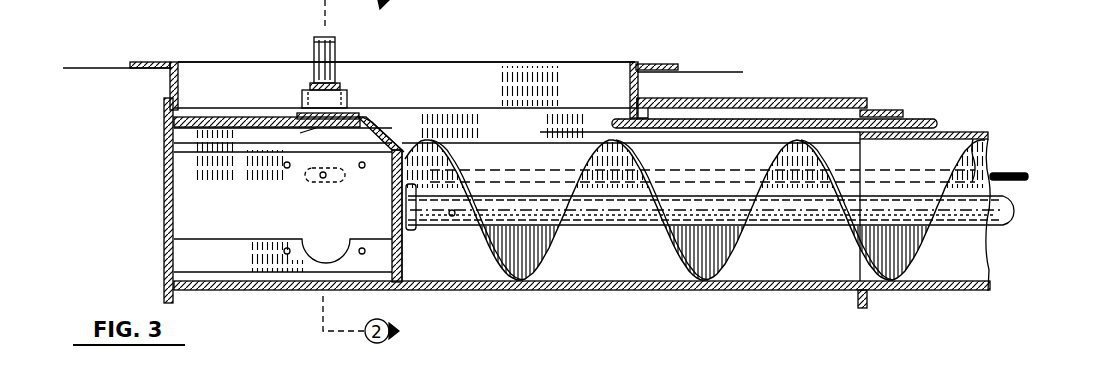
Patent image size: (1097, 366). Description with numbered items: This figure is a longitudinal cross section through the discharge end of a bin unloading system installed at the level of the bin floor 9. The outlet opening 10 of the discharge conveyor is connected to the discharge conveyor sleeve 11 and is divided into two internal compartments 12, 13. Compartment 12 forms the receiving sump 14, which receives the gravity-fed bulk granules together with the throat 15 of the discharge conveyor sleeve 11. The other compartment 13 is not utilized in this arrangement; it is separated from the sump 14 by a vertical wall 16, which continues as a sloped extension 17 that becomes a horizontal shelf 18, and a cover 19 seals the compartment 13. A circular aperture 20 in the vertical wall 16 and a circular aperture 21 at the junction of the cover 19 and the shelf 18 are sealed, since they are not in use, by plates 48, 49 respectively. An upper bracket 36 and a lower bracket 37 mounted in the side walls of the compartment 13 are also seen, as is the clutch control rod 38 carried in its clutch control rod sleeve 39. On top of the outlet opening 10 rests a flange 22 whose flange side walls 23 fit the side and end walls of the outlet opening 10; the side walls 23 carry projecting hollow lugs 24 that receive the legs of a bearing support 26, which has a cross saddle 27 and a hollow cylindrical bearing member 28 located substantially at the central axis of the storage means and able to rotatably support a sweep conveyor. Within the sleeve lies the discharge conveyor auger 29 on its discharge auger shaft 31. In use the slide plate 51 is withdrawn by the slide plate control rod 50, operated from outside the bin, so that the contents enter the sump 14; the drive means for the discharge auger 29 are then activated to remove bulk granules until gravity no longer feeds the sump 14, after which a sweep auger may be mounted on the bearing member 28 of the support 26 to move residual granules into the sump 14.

The bin floor 9 is at (76, 68).
The outlet opening 10 is at (506, 294).
The discharge conveyor sleeve 11 is at (977, 133).
The compartment 12 is at (646, 268).
The compartment 13 is at (195, 220).
The receiving sump 14 is at (546, 83).
The throat 15 is at (724, 135).
The vertical wall 16 is at (404, 258).
The sloped extension 17 is at (385, 132).
The horizontal shelf 18 is at (362, 121).
The cover 19 is at (212, 118).
The circular aperture 20 is at (392, 207).
The circular aperture 21 is at (313, 130).
The flange 22 is at (152, 62).
The flange side walls 23 is at (180, 80).
The hollow lugs 24 is at (345, 95).
The bearing support 26 is at (340, 58).
The cross saddle 27 is at (308, 84).
The bearing member 28 is at (318, 48).
The discharge conveyor auger 29 is at (740, 262).
The discharge auger shaft 31 is at (612, 224).
The upper bracket 36 is at (195, 183).
The lower bracket 37 is at (220, 260).
The clutch control rod 38 is at (315, 183).
The clutch control rod sleeve 39 is at (718, 176).
The plate 48 is at (418, 236).
The plate 49 is at (295, 113).
The slide plate control rod 50 is at (916, 118).
The slide plate 51 is at (796, 122).